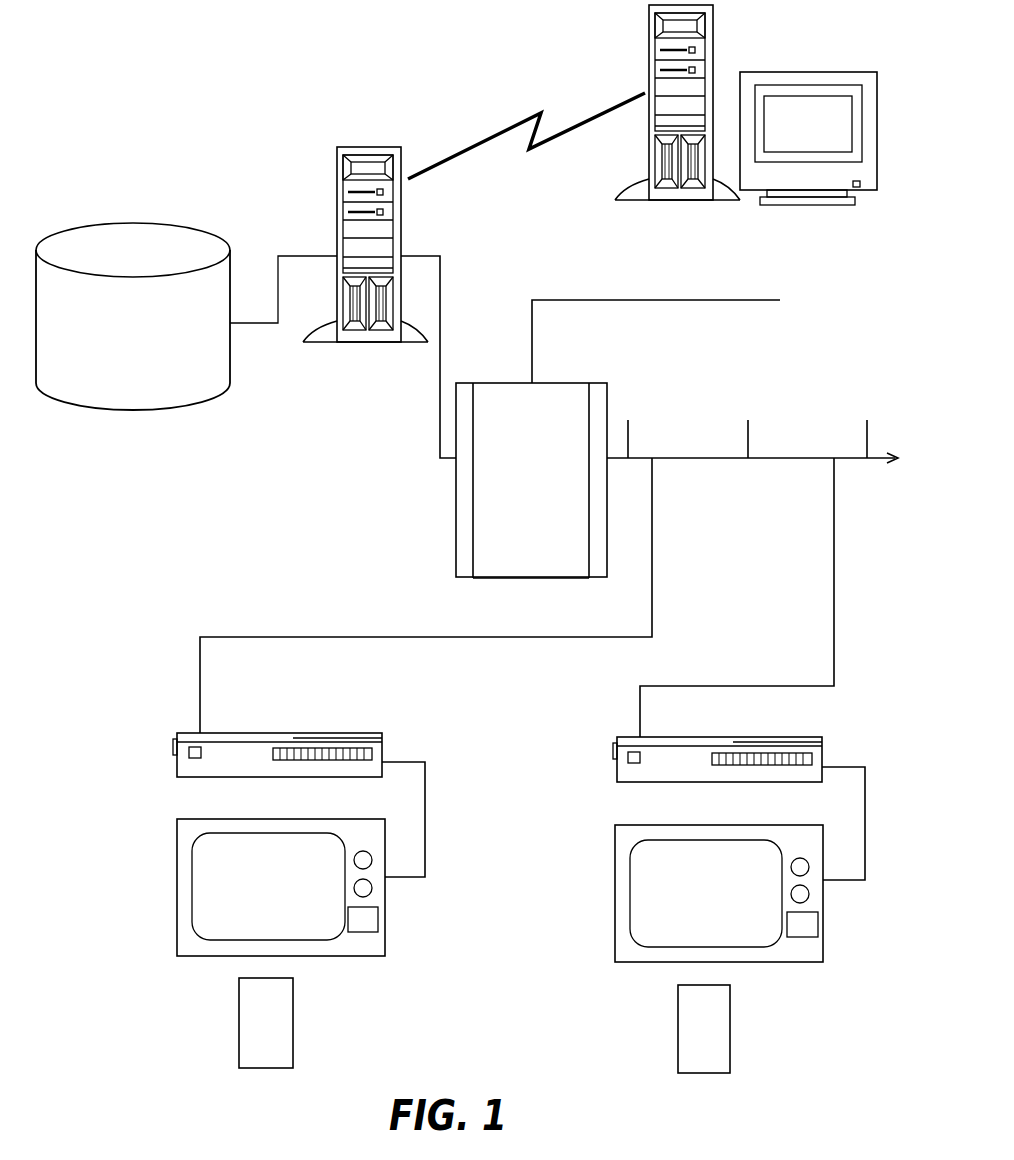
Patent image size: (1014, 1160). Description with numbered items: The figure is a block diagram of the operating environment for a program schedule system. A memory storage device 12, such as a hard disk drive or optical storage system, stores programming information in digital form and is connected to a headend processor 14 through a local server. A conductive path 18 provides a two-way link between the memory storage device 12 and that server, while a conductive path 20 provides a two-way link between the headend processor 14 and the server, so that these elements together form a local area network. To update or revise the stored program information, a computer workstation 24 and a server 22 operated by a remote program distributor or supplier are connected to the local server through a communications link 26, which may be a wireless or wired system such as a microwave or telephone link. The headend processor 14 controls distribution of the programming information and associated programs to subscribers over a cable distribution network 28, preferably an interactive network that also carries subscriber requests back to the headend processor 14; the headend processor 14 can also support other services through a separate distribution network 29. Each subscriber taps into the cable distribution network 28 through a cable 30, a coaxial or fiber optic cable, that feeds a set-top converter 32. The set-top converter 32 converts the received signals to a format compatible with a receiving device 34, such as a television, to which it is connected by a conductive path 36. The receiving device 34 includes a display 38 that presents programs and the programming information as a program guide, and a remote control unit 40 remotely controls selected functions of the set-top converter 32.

The memory storage device 12 is at (112, 222).
The headend processor 14 is at (556, 383).
The conductive path 18 is at (300, 256).
The conductive path 20 is at (440, 406).
The server 22 is at (713, 14).
The computer workstation 24 is at (853, 72).
The communications link 26 is at (520, 118).
The cable distribution network 28 is at (788, 462).
The separate distribution network 29 is at (719, 302).
The cable 30 is at (652, 593).
The set-top converter 32 is at (237, 732).
The receiving device 34 is at (355, 957).
The conductive path 36 is at (427, 818).
The display 38 is at (200, 913).
The remote control unit 40 is at (293, 1032).